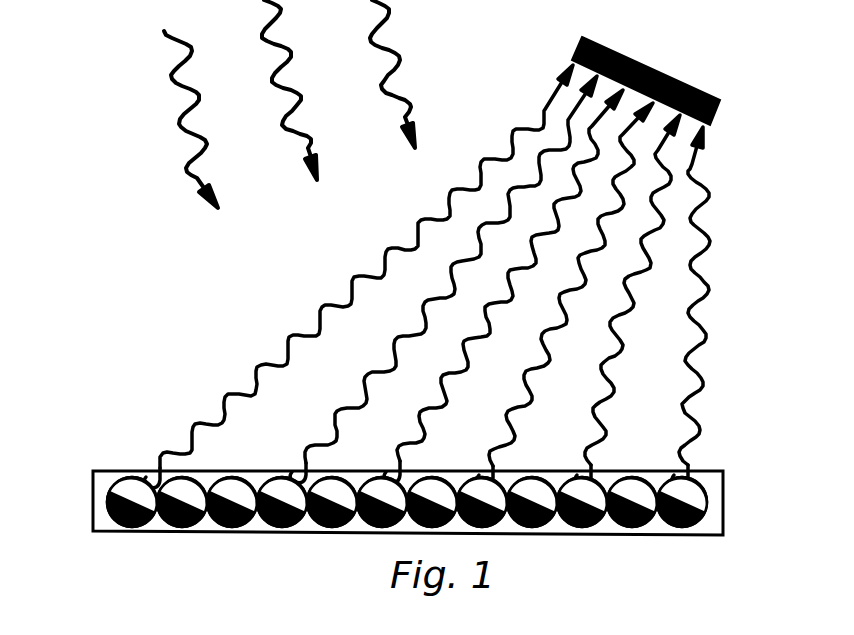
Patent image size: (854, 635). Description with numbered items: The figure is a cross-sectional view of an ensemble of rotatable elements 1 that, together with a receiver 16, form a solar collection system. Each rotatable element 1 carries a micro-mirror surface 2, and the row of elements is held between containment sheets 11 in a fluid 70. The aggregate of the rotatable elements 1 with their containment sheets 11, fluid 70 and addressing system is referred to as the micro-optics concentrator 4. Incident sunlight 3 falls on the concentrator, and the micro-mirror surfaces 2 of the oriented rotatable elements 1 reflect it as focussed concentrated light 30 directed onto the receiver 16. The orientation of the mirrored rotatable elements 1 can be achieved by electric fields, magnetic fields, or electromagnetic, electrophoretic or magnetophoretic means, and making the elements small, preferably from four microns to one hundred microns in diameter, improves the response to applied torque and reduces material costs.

The rotatable element 1 is at (94, 519).
The micro-mirror surface 2 is at (226, 475).
The incident sunlight 3 is at (183, 125).
The micro-optics concentrator 4 is at (775, 479).
The containment sheets 11 is at (617, 473).
The receiver 16 is at (680, 78).
The focussed concentrated light 30 is at (230, 397).
The fluid 70 is at (557, 482).